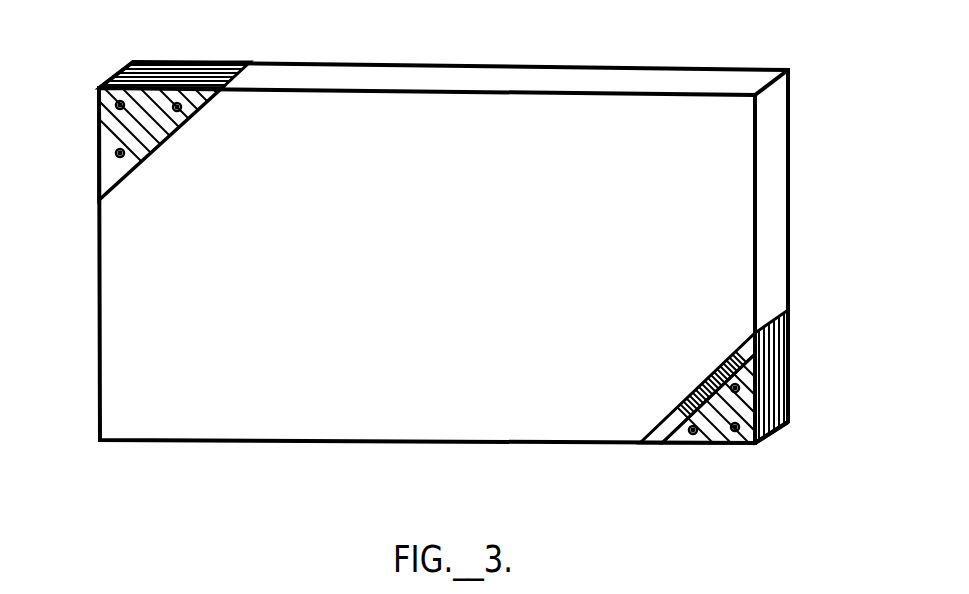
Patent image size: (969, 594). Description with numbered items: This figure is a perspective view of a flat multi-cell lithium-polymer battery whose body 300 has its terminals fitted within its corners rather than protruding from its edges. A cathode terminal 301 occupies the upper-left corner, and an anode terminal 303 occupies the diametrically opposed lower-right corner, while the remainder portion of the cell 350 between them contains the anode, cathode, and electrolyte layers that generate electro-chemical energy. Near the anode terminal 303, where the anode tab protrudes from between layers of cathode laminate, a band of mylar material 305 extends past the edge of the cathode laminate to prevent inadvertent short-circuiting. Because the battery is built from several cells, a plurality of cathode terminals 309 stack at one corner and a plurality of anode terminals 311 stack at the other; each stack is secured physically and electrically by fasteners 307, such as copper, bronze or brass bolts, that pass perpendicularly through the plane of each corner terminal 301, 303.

The battery body 300 is at (208, 468).
The cathode terminal 301 is at (118, 120).
The anode terminal 303 is at (718, 445).
The mylar material 305 is at (652, 446).
The fasteners 307 is at (733, 445).
The plurality of cathode terminals 309 is at (96, 85).
The plurality of anode terminals 311 is at (765, 453).
The remainder portion of the cell 350 is at (434, 331).